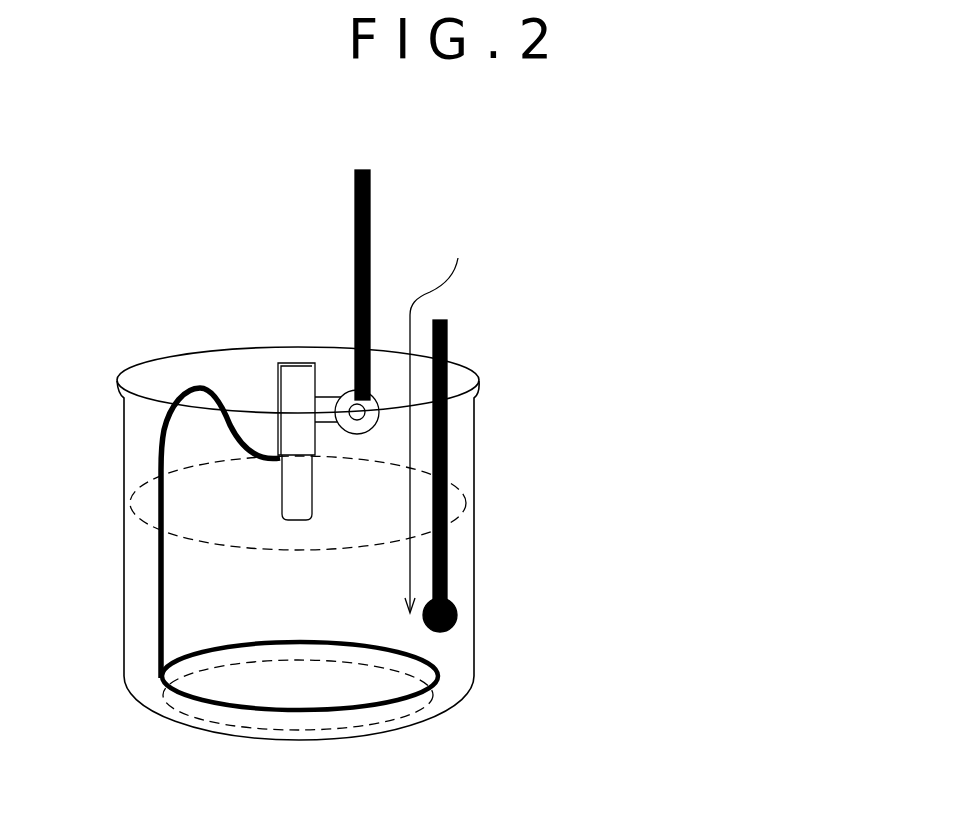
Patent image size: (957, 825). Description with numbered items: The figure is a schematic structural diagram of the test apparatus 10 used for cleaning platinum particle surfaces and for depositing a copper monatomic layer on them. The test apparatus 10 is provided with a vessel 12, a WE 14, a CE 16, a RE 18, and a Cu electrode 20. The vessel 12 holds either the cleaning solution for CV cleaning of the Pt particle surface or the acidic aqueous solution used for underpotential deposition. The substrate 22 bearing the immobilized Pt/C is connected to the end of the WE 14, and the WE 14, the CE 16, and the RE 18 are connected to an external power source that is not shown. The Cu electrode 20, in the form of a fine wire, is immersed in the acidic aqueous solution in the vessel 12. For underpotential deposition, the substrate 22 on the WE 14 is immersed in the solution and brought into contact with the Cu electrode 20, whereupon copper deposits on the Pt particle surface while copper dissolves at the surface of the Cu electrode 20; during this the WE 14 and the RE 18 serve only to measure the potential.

The test apparatus 10 is at (650, 203).
The vessel 12 is at (163, 357).
The WE 14 is at (355, 242).
The CE 16 is at (447, 335).
The RE 18 is at (438, 419).
The Cu electrode 20 is at (160, 458).
The substrate 22 is at (280, 495).